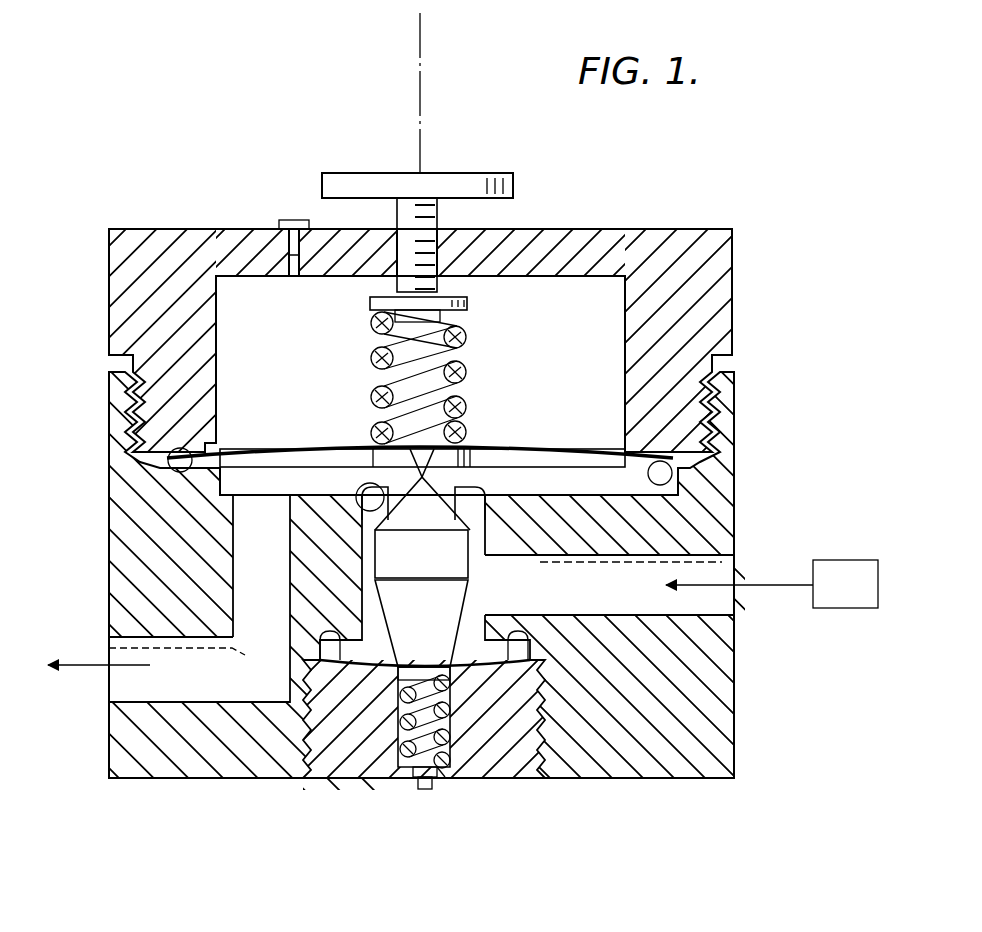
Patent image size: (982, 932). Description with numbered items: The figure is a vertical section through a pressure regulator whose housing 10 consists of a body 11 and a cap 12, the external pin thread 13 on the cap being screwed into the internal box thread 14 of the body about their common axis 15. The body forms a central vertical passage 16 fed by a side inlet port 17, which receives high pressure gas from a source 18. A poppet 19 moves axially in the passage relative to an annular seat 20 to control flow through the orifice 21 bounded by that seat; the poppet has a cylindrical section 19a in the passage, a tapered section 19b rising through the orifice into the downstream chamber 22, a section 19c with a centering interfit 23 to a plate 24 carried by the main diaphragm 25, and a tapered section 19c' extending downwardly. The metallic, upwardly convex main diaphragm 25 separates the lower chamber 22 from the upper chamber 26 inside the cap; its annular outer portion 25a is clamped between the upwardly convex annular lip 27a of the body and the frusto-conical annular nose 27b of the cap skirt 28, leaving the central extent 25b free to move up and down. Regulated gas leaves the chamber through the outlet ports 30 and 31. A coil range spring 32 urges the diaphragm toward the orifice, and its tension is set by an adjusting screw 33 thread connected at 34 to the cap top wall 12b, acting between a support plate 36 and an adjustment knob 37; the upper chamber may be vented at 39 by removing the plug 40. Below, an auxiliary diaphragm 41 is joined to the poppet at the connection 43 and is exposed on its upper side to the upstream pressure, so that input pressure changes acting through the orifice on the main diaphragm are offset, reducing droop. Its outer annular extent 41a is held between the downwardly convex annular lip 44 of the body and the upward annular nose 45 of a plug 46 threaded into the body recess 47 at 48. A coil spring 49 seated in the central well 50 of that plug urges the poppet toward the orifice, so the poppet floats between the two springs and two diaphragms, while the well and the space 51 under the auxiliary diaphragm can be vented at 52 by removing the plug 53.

The housing 10 is at (778, 422).
The body 11 is at (734, 518).
The cap 12 is at (732, 296).
The cap top wall 12b is at (614, 240).
The external pin thread 13 is at (125, 415).
The internal box thread 14 is at (128, 445).
The common axis 15 is at (420, 33).
The central vertical passage 16 is at (490, 596).
The side inlet port 17 is at (636, 556).
The source of inlet fluid 18 is at (846, 608).
The poppet 19 is at (378, 600).
The cylindrical section 19a is at (362, 552).
The tapered section 19b is at (421, 554).
The poppet section 19c is at (475, 484).
The tapered section 19c' is at (421, 623).
The annular seat 20 is at (480, 528).
The orifice 21 is at (355, 507).
The chamber 22 is at (565, 457).
The centering interfit 23 is at (373, 418).
The plate 24 is at (470, 447).
The main diaphragm 25 is at (520, 440).
The annular outer portion 25a is at (676, 492).
The diaphragm central extent 25b is at (290, 446).
The upper chamber 26 is at (297, 356).
The annular lip 27a is at (185, 460).
The annular nose 27b is at (185, 498).
The cap skirt 28 is at (210, 422).
The outlet port 30 is at (255, 571).
The outlet port 31 is at (148, 700).
The range spring 32 is at (470, 352).
The adjusting screw 33 is at (437, 213).
The thread connection 34 is at (437, 250).
The support plate 36 is at (370, 303).
The adjustment knob 37 is at (487, 173).
The vent 39 is at (292, 257).
The plug 40 is at (294, 220).
The auxiliary diaphragm 41 is at (362, 690).
The outer annular extent 41a is at (312, 714).
The connection 43 is at (428, 667).
The annular lip 44 is at (452, 736).
The annular nose 45 is at (530, 656).
The plug 46 is at (335, 780).
The body recess 47 is at (545, 662).
The thread 48 is at (556, 716).
The coil spring 49 is at (462, 775).
The central well 50 is at (415, 790).
The space 51 is at (510, 640).
The vent 52 is at (442, 786).
The plug 53 is at (425, 792).